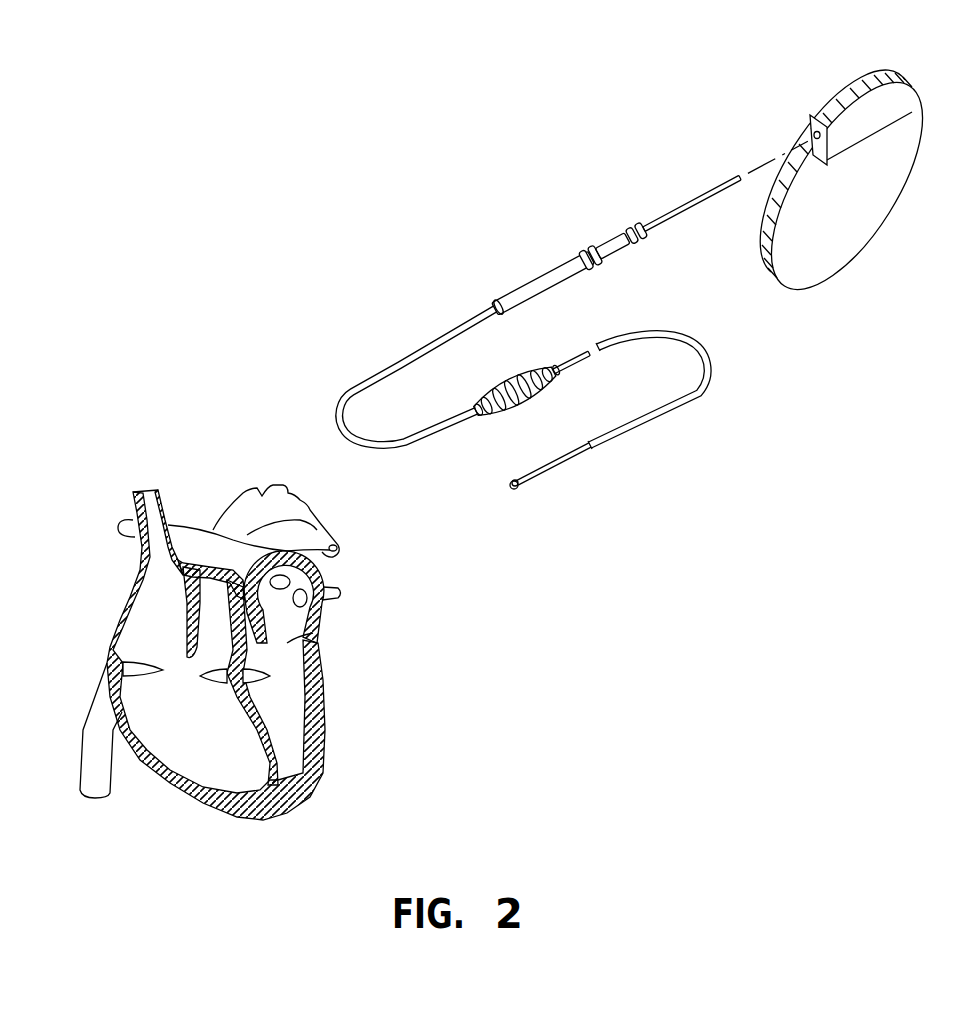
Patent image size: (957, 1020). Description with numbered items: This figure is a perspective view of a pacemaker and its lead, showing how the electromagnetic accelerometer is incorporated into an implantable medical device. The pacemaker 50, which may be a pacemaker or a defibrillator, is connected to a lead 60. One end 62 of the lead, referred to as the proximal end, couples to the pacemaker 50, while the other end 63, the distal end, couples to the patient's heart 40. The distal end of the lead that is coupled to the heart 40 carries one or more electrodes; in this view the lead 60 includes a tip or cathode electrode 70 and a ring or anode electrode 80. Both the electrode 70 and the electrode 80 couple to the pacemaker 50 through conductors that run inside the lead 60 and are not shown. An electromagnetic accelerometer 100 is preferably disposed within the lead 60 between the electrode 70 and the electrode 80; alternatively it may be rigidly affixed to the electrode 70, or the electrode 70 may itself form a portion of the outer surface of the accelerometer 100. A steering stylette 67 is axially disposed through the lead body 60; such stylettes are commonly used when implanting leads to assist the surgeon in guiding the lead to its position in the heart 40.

The heart 40 is at (320, 684).
The pacemaker 50 is at (862, 220).
The lead 60 is at (437, 317).
The proximal end 62 is at (660, 182).
The distal end 63 is at (512, 500).
The steering stylette 67 is at (712, 193).
The tip or cathode electrode 70 is at (520, 477).
The ring or anode electrode 80 is at (598, 435).
The electromagnetic accelerometer 100 is at (550, 470).